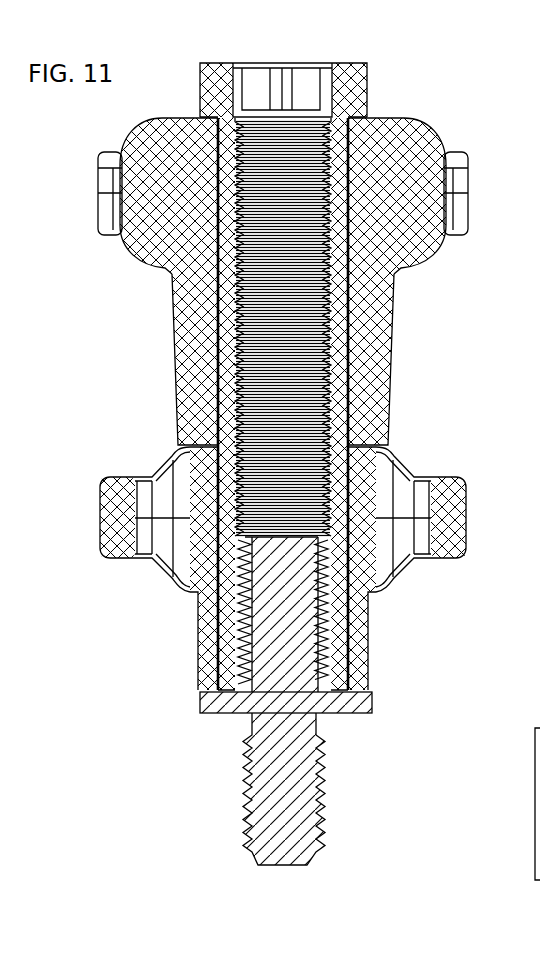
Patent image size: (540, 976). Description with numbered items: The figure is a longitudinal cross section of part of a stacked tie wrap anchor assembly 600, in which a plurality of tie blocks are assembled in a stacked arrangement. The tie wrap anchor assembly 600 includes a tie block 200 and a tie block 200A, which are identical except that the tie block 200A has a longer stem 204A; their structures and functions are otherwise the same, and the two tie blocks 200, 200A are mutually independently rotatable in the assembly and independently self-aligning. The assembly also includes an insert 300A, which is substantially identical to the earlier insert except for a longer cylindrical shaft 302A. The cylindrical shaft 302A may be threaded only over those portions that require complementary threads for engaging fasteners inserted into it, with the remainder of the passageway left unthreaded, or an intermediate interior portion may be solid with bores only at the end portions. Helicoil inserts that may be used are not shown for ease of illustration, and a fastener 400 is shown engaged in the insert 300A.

The tie wrap anchor assembly 600 is at (197, 88).
The insert 300A is at (346, 52).
The tie block 200A is at (97, 167).
The stem 204A is at (166, 358).
The cylindrical shaft 302A is at (392, 296).
The tie block 200 is at (190, 604).
The threaded stud 400 is at (238, 742).